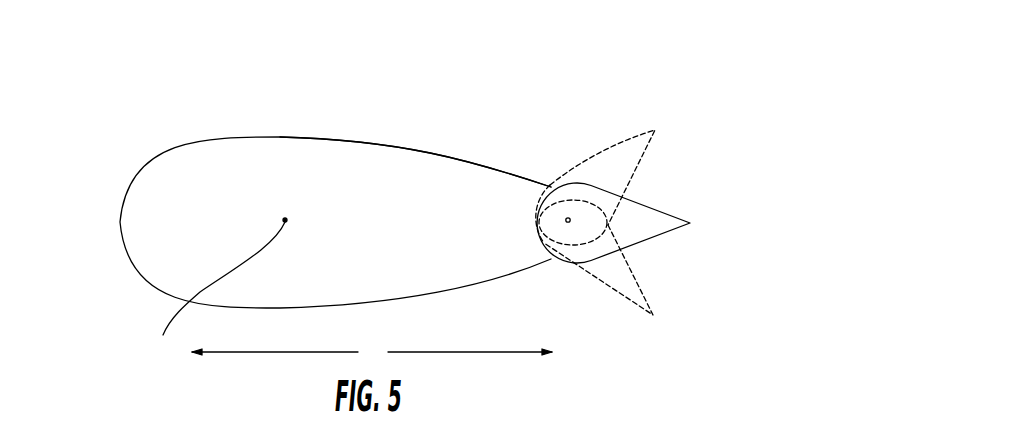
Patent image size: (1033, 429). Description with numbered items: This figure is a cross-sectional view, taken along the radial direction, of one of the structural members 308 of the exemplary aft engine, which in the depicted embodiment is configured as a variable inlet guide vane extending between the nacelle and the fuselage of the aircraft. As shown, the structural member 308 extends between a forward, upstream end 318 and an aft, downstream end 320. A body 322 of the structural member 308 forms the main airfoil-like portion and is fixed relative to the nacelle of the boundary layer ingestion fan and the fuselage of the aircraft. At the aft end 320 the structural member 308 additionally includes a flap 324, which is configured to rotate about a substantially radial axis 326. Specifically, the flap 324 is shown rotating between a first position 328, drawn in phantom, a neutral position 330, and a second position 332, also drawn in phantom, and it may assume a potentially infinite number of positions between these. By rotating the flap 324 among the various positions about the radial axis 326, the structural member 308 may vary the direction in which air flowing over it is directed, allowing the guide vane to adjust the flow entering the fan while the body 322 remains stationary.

The structural member 308 is at (372, 120).
The forward, upstream end 318 is at (100, 163).
The aft, downstream end 320 is at (757, 208).
The body 322 is at (266, 137).
The flap 324 is at (660, 220).
The substantially radial axis 326 is at (568, 218).
The first position 328 is at (663, 118).
The neutral position 330 is at (712, 247).
The second position 332 is at (655, 322).